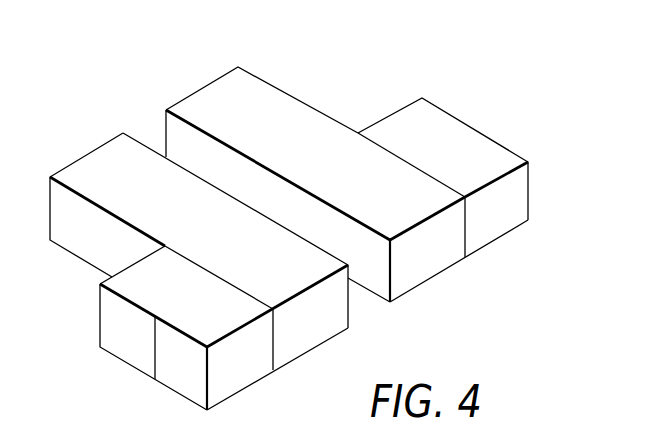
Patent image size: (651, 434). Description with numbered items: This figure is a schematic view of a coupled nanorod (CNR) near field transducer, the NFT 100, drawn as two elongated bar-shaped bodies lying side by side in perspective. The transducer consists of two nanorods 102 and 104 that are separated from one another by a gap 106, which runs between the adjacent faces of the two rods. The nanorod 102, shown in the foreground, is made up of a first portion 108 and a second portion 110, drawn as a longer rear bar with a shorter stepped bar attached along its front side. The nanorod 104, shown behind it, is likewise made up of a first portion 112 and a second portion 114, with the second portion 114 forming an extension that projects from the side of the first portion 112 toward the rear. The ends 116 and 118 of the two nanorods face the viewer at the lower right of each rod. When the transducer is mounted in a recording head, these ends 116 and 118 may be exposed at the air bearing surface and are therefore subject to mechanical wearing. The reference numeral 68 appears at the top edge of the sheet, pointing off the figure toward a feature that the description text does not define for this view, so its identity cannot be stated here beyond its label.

The support 68 is at (276, 0).
The coupled nanorod NFT 100 is at (433, 60).
The nanorod 102 is at (100, 167).
The nanorod 104 is at (208, 105).
The gap 106 is at (363, 310).
The first portion 108 is at (135, 203).
The second portion 110 is at (183, 372).
The first portion 112 is at (322, 138).
The second portion 114 is at (452, 137).
The end 116 is at (300, 340).
The end 118 is at (433, 263).